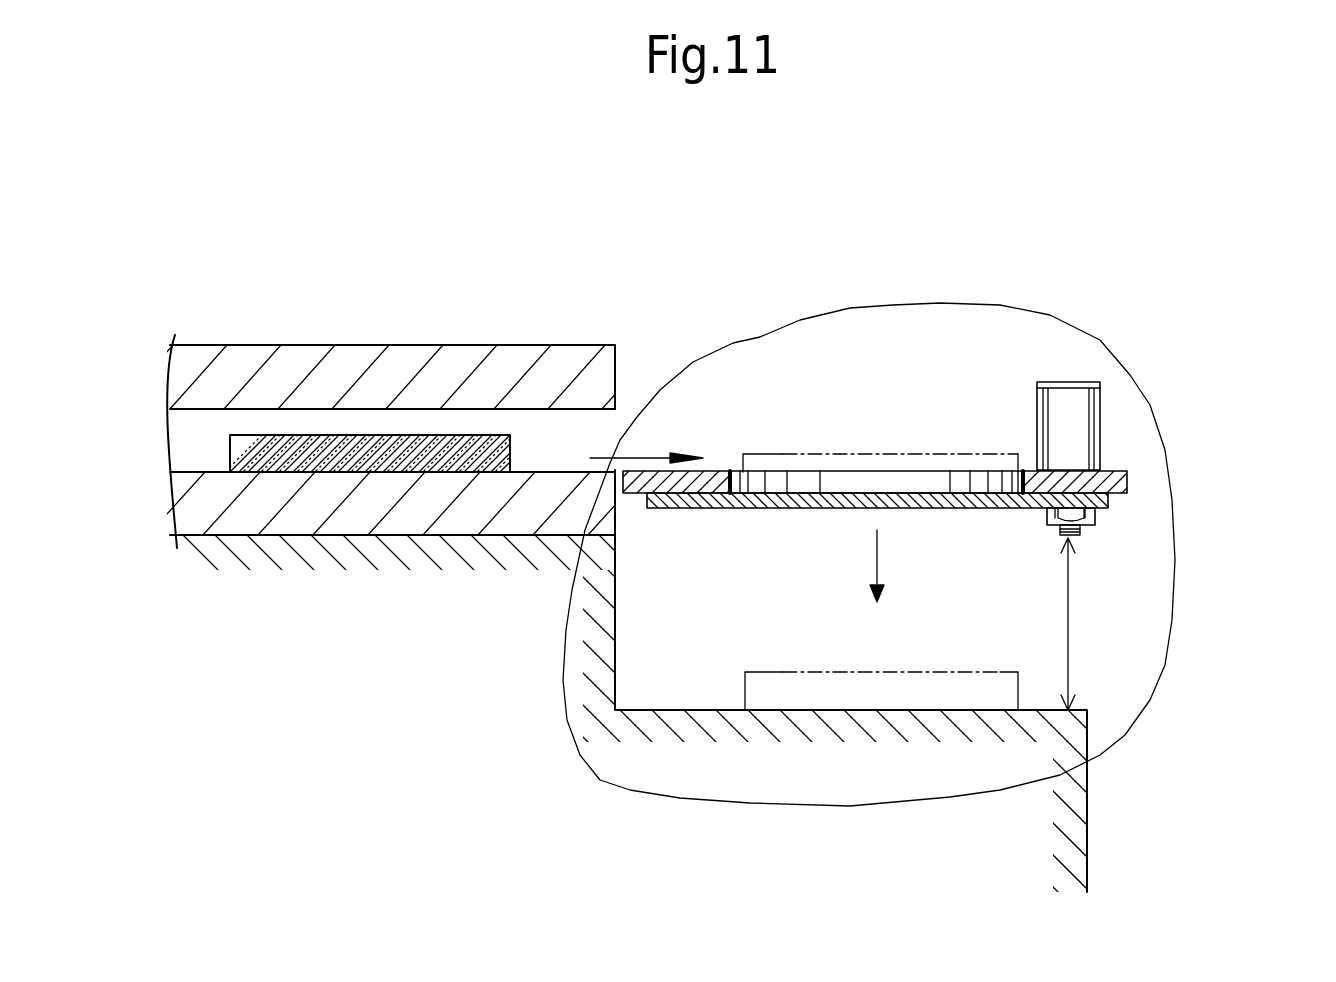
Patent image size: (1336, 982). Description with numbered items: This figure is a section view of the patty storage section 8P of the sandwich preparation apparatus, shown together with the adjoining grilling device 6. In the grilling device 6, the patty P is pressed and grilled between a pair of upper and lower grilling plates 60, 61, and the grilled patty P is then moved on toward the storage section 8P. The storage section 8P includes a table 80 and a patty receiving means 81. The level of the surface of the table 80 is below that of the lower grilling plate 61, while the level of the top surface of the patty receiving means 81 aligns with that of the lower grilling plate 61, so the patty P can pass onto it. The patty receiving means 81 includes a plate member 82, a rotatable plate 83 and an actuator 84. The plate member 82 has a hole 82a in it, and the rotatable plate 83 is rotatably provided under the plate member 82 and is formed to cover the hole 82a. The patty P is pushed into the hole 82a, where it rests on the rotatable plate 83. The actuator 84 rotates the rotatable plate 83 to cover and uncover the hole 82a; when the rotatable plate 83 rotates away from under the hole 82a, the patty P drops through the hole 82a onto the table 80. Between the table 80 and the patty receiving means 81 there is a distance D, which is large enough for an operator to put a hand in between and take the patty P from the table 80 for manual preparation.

The grilling device 6 is at (618, 285).
The upper grilling plate 60 is at (490, 378).
The lower grilling plate 61 is at (200, 512).
The patty P is at (333, 447).
The storage section 8P is at (893, 305).
The table 80 is at (1080, 710).
The patty receiving means 81 is at (1252, 533).
The plate member 82 is at (918, 363).
The hole 82a is at (922, 485).
The rotatable plate 83 is at (1108, 499).
The actuator 84 is at (1073, 395).
The distance D is at (1068, 625).